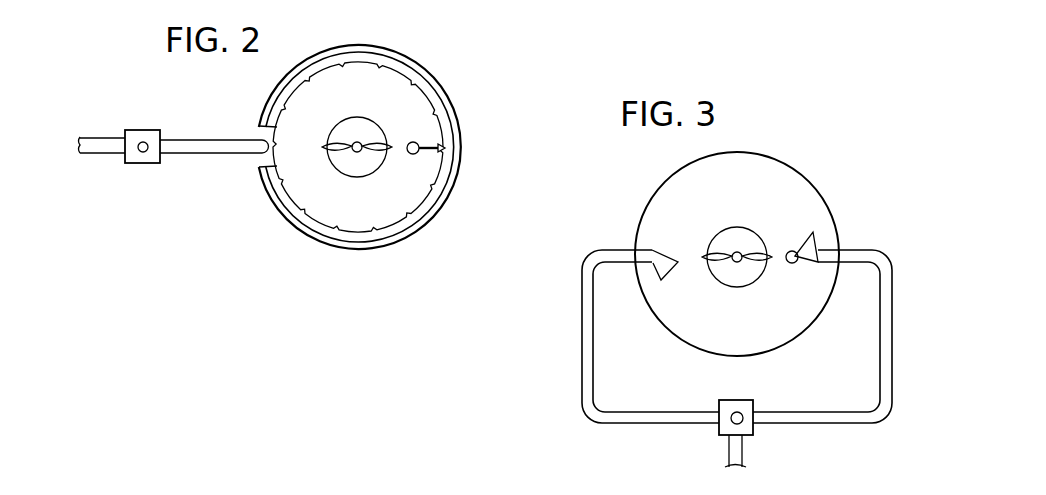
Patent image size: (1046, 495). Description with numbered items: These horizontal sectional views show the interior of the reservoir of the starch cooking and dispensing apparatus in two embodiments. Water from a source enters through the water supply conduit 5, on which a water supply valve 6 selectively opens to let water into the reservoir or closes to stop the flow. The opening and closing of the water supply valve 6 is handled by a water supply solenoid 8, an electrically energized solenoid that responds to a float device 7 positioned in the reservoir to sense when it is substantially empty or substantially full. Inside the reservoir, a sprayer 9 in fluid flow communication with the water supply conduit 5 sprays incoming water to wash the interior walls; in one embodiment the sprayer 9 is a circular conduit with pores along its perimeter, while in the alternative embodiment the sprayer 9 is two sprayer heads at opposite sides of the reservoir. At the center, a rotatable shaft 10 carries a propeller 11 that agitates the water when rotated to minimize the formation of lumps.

In FIG. 2, the water supply conduit 5 is at (219, 148).
In FIG. 2, the water supply valve 6 is at (157, 163).
In FIG. 3, the water supply valve 6 is at (718, 407).
In FIG. 2, the float device 7 is at (417, 154).
In FIG. 3, the float device 7 is at (792, 263).
In FIG. 2, the water supply solenoid 8 is at (141, 152).
In FIG. 3, the water supply solenoid 8 is at (740, 417).
In FIG. 2, the sprayer 9 is at (280, 242).
In FIG. 3, the sprayer 9 is at (817, 245).
In FIG. 2, the rotatable shaft 10 is at (357, 143).
In FIG. 3, the rotatable shaft 10 is at (737, 252).
In FIG. 2, the propeller 11 is at (340, 150).
In FIG. 3, the propeller 11 is at (723, 252).